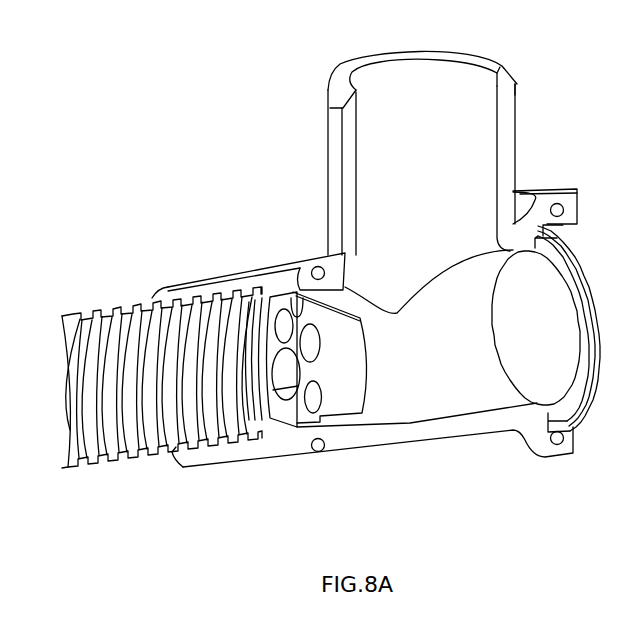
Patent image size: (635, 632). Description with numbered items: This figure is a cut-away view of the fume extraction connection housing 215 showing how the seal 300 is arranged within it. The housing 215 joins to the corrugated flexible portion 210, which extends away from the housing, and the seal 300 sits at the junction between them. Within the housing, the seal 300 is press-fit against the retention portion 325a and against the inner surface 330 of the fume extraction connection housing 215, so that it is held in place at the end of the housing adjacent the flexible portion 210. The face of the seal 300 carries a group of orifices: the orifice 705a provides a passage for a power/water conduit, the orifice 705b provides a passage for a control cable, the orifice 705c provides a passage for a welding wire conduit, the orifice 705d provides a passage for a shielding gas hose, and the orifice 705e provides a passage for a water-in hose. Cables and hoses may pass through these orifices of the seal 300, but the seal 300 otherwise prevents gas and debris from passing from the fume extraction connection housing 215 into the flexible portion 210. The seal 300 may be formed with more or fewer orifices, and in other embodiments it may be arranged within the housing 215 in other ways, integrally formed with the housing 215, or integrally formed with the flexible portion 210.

The flexible portion 210 is at (150, 458).
The fume extraction connection housing 215 is at (547, 188).
The seal 300 is at (352, 298).
The retention portion 325a is at (285, 418).
The inner surface 330 is at (373, 413).
The orifice 705a is at (283, 355).
The orifice 705b is at (303, 294).
The orifice 705c is at (320, 349).
The orifice 705d is at (278, 322).
The orifice 705e is at (302, 425).